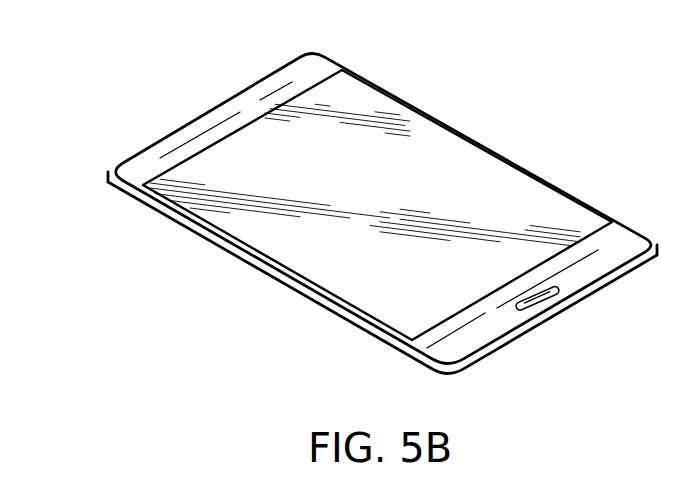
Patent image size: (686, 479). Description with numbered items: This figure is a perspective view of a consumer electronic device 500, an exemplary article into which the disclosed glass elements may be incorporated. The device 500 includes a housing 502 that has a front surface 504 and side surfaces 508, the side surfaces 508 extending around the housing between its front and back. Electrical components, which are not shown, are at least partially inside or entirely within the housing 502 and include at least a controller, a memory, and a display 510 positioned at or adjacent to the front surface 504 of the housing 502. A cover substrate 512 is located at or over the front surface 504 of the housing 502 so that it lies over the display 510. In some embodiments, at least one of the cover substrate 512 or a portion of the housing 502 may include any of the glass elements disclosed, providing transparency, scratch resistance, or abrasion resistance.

The consumer electronic device 500 is at (130, 88).
The housing 502 is at (320, 64).
The front surface 504 is at (627, 247).
The side surfaces 508 is at (148, 210).
The display 510 is at (433, 155).
The cover substrate 512 is at (320, 268).